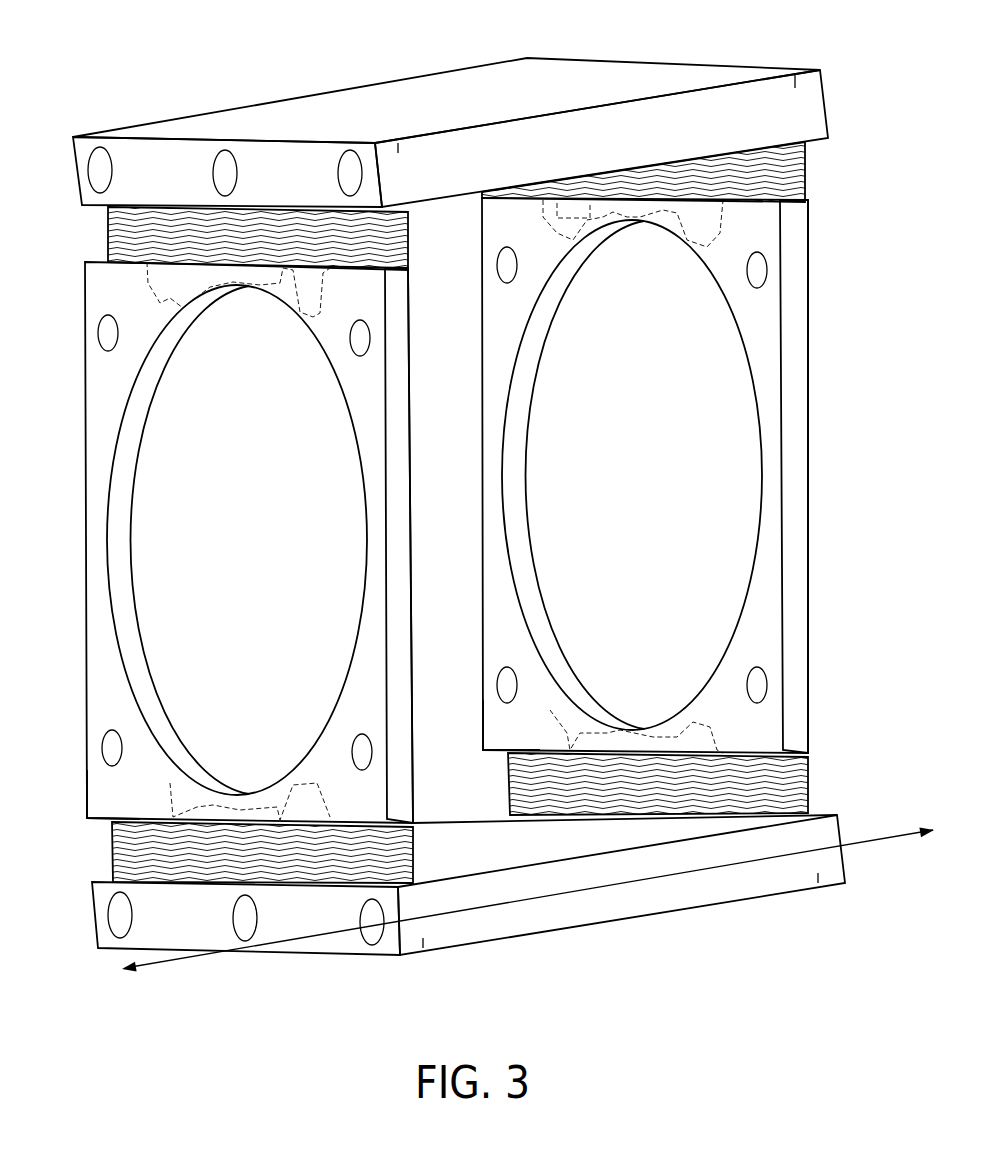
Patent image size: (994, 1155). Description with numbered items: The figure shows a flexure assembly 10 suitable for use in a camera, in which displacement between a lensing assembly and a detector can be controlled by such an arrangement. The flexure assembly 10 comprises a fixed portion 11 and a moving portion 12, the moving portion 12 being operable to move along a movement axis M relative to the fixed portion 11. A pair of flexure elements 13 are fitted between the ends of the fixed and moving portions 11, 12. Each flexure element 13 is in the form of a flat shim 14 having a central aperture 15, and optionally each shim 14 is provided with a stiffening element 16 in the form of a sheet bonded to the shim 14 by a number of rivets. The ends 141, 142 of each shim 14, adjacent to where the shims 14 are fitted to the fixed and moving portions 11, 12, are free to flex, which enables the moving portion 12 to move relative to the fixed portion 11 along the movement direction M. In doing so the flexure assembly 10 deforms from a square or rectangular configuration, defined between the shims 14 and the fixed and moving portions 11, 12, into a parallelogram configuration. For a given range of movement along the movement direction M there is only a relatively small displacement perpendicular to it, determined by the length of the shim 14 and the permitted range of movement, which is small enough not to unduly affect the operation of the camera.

The flexure assembly 10 is at (238, 326).
The fixed portion 11 is at (375, 92).
The moving portion 12 is at (510, 918).
The flexure element 13 is at (74, 440).
The shim 14 is at (413, 502).
The central aperture 15 is at (251, 550).
The stiffening element 16 is at (100, 806).
The end of shim 141 is at (163, 862).
The end of shim 142 is at (260, 248).